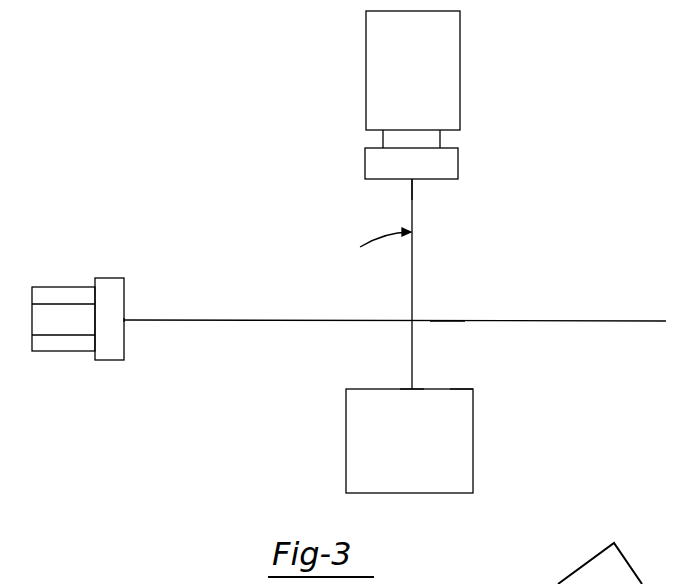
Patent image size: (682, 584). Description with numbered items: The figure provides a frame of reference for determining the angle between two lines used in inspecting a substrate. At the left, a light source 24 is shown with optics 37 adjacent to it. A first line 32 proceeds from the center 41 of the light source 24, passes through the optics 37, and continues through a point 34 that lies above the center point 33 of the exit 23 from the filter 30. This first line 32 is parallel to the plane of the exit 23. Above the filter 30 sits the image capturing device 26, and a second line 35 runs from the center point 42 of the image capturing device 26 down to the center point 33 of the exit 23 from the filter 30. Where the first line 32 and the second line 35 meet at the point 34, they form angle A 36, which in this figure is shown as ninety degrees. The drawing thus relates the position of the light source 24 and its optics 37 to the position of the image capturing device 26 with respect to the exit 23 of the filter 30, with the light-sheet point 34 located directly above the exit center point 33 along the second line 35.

The exit 23 is at (465, 389).
The light source 24 is at (68, 310).
The image capturing device 26 is at (400, 77).
The filter 30 is at (346, 455).
The first line 32 is at (567, 321).
The center point 33 is at (407, 387).
The point 34 is at (447, 321).
The second line 35 is at (412, 252).
The angle A 36 is at (320, 320).
The optics 37 is at (108, 278).
The center of the light source 41 is at (124, 320).
The center point of the image capturing device 42 is at (412, 181).